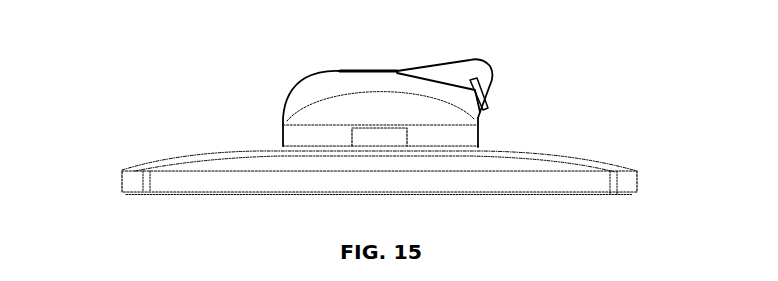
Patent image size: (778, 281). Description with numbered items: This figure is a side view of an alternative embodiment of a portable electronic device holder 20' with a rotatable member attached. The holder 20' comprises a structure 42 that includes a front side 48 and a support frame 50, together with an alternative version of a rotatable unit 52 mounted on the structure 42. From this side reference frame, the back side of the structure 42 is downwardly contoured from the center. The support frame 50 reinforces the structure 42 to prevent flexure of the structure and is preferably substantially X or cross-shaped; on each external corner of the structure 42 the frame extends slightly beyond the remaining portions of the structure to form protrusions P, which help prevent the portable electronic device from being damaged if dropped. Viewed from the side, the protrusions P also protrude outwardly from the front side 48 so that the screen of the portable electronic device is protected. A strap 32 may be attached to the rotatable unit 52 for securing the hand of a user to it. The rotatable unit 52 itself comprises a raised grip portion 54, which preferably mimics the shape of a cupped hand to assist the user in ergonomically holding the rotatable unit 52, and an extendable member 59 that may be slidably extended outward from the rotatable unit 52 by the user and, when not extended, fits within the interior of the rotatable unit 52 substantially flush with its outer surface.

The portable electronic device holder 20' is at (363, 149).
The strap 32 is at (493, 84).
The structure 42 is at (208, 167).
The front side 48 is at (535, 192).
The support frame 50 is at (248, 152).
The rotatable unit 52 is at (310, 107).
The raised grip portion 54 is at (305, 117).
The extendable member 59 is at (362, 137).
The protrusions P is at (130, 182).